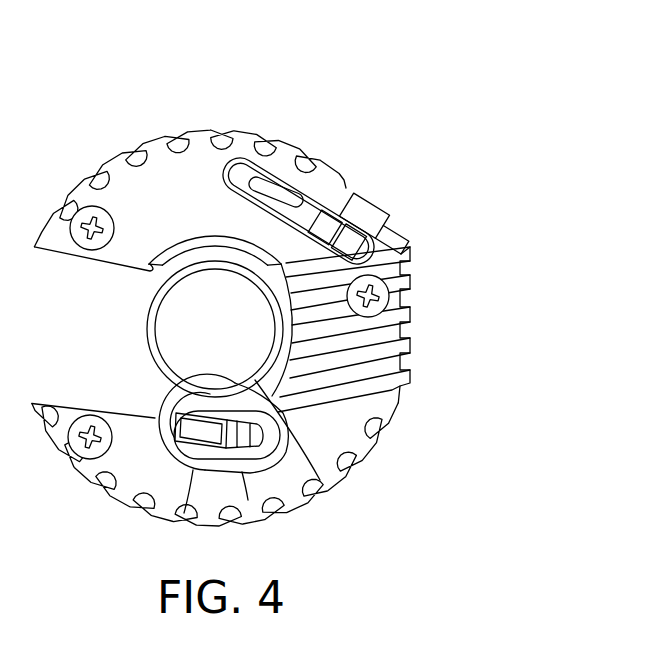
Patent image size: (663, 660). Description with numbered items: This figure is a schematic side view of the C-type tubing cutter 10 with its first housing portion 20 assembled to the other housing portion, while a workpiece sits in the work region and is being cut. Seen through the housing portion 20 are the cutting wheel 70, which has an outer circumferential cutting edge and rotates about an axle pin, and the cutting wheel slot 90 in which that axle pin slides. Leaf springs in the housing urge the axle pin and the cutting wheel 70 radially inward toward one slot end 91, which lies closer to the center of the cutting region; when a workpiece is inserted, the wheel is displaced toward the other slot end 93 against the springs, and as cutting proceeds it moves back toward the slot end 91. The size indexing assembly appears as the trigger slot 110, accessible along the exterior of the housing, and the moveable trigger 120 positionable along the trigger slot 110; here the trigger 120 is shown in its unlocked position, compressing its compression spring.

The C-type tubing cutter 10 is at (304, 298).
The first housing portion 20 is at (221, 295).
The cutting wheel 70 is at (160, 397).
The cutting wheel slot 90 is at (256, 474).
The slot end 91 is at (193, 507).
The slot end 93 is at (300, 500).
The trigger slot 110 is at (297, 192).
The moveable trigger 120 is at (350, 193).